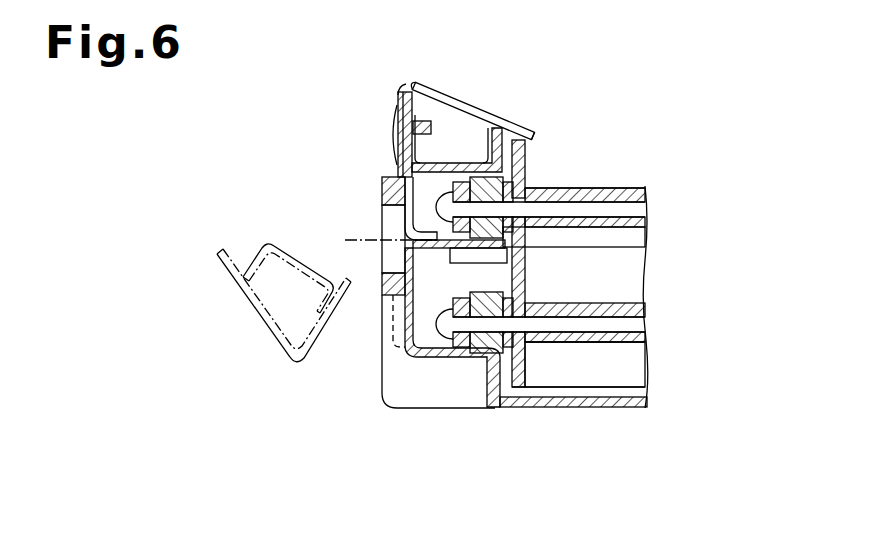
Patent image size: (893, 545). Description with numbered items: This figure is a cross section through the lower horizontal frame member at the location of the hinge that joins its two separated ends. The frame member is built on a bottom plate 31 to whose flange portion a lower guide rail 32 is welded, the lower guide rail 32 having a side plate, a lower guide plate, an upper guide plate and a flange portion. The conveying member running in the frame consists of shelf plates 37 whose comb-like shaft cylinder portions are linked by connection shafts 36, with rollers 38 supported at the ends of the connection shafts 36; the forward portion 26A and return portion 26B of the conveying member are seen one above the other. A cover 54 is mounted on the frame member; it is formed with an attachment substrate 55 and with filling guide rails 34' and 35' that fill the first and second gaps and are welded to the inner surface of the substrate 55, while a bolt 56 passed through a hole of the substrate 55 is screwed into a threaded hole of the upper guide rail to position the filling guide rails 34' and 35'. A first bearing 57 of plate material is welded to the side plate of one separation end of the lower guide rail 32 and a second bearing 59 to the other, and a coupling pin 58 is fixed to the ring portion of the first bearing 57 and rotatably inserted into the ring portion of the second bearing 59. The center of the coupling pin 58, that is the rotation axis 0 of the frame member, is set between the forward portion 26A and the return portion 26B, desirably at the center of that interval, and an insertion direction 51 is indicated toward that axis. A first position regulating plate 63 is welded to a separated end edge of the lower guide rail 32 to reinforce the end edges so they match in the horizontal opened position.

The cover 54 is at (452, 91).
The filling guide rail 34' is at (542, 110).
The attachment substrate 55 is at (400, 94).
The bolt 56 is at (397, 132).
The second bearing 59 is at (399, 174).
The first bearing 57 is at (382, 186).
The coupling pin 58 is at (383, 258).
The first position regulating plate 63 is at (386, 375).
The rotation axis 0 is at (358, 236).
The insertion direction 51 is at (336, 237).
The filling guide rail 35' is at (457, 143).
The lower guide rail 32 is at (424, 358).
The bottom plate 31 is at (575, 400).
The forward portion 26A is at (603, 188).
The return portion 26B is at (618, 303).
The shelf plate 37 is at (620, 190).
The connection shaft 36 is at (582, 208).
The roller 38 is at (483, 230).